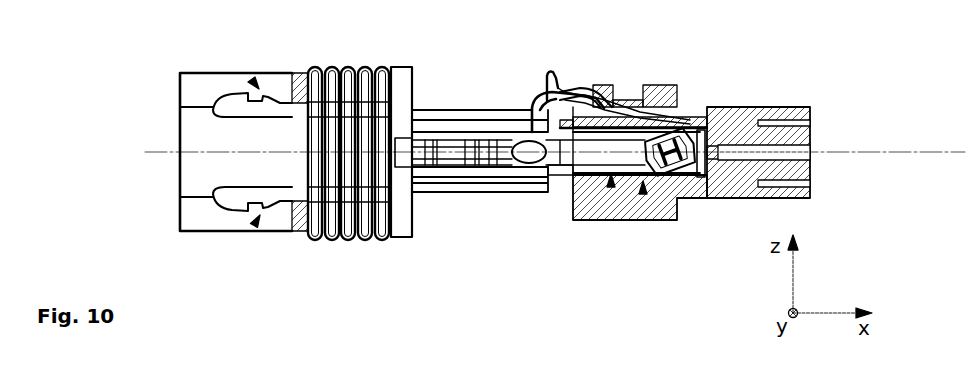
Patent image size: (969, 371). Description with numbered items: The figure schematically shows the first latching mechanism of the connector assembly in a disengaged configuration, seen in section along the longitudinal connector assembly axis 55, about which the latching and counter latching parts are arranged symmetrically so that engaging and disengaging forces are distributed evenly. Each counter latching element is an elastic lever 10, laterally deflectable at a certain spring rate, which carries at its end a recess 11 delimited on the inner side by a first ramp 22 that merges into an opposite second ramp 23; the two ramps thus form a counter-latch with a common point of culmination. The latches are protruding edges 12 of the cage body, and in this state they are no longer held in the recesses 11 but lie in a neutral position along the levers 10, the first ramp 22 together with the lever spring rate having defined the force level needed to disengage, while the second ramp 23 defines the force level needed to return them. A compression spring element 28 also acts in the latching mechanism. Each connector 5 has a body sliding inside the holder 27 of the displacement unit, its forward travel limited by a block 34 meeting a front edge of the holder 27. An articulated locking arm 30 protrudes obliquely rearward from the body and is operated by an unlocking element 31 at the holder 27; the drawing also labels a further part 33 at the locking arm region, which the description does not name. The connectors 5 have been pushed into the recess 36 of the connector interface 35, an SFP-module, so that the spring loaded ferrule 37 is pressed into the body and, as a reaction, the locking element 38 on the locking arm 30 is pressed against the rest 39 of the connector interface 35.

The connector 5 is at (611, 187).
The elastic lever 10 is at (342, 112).
The recess 11 is at (251, 80).
The protruding edge 12 is at (320, 241).
The first ramp 22 is at (262, 100).
The second ramp 23 is at (277, 103).
The holder 27 is at (495, 188).
The spring element 28 is at (355, 233).
The locking arm 30 is at (585, 92).
The unlocking element 31 is at (553, 110).
The hook 33 is at (550, 72).
The block 34 is at (562, 175).
The connector interface 35 is at (743, 107).
The recess 36 is at (645, 194).
The spring loaded ferrule 37 is at (707, 133).
The locking element 38 is at (625, 97).
The rest 39 is at (610, 107).
The longitudinal connector assembly axis 55 is at (198, 152).